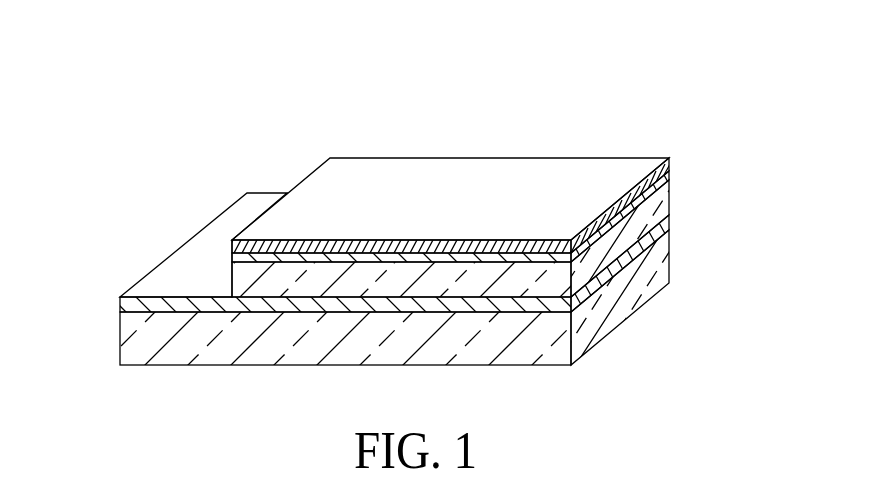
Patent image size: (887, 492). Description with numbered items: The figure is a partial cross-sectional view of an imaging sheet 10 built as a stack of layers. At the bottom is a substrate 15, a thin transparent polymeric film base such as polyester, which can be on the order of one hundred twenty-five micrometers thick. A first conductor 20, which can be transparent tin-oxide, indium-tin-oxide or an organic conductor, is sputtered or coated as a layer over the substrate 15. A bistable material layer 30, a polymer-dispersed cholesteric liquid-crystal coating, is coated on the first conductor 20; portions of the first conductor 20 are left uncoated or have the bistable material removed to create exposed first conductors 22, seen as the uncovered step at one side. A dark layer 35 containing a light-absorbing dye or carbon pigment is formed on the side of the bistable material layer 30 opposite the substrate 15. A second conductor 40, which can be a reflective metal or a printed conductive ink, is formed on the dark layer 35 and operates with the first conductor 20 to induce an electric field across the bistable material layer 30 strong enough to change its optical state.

The imaging sheet 10 is at (241, 81).
The substrate 15 is at (137, 338).
The first conductor 20 is at (668, 223).
The exposed first conductors 22 is at (155, 290).
The bistable material layer 30 is at (660, 205).
The dark layer 35 is at (672, 159).
The second conductor 40 is at (358, 164).